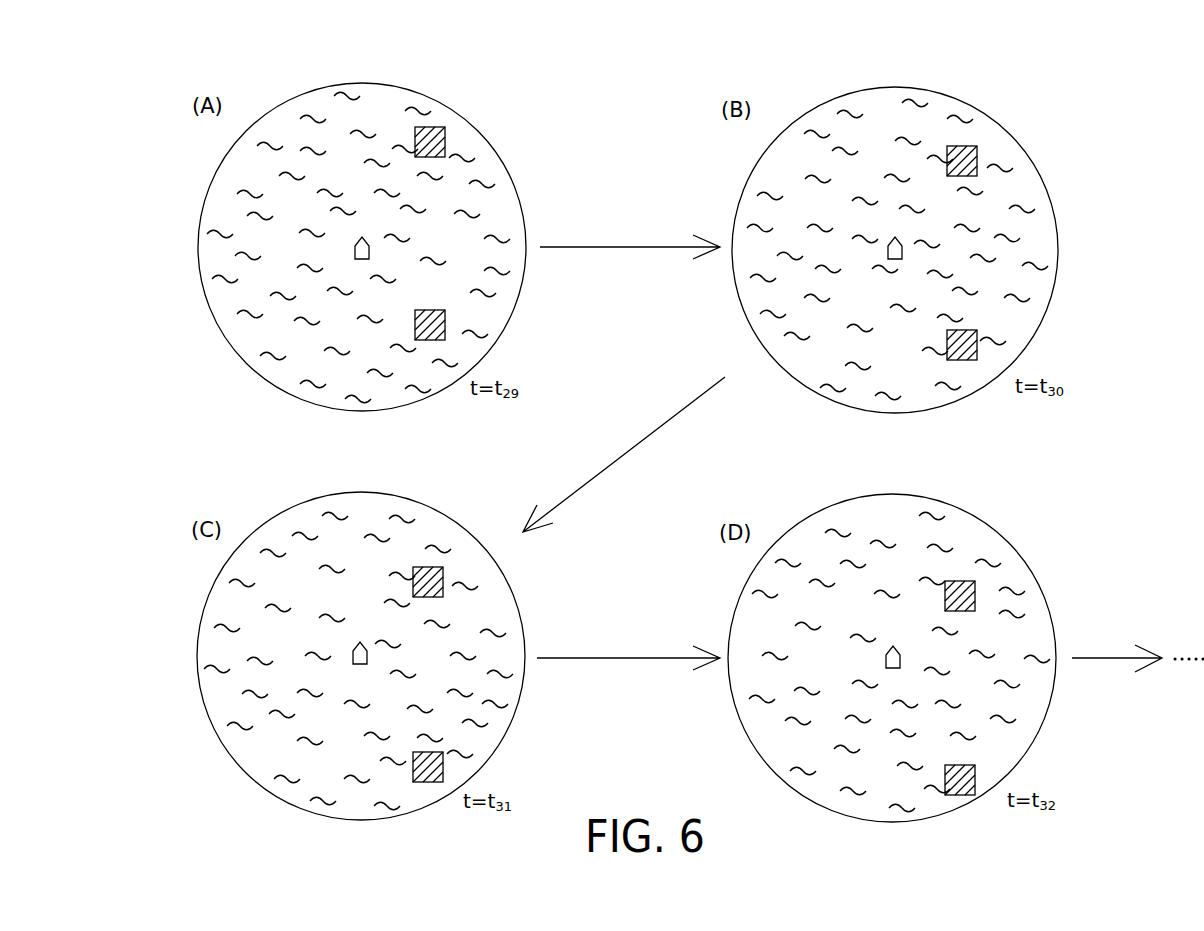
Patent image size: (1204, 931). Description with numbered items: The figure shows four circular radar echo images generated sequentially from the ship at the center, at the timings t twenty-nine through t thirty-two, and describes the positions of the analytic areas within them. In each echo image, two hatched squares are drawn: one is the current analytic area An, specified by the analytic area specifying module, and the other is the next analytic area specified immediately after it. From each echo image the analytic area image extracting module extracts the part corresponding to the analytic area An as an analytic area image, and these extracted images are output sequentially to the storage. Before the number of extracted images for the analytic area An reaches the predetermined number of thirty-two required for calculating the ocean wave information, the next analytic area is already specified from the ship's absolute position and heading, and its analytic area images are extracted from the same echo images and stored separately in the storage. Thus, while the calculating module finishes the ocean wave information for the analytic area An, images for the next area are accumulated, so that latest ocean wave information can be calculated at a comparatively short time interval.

The analytic area An is at (445, 325).